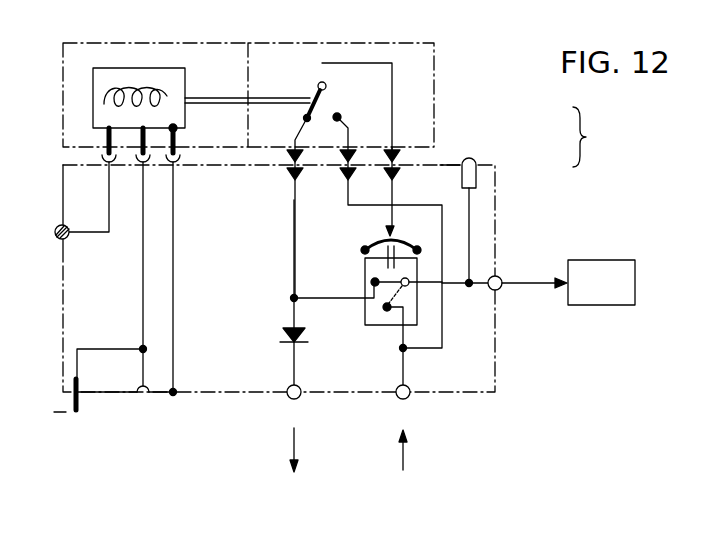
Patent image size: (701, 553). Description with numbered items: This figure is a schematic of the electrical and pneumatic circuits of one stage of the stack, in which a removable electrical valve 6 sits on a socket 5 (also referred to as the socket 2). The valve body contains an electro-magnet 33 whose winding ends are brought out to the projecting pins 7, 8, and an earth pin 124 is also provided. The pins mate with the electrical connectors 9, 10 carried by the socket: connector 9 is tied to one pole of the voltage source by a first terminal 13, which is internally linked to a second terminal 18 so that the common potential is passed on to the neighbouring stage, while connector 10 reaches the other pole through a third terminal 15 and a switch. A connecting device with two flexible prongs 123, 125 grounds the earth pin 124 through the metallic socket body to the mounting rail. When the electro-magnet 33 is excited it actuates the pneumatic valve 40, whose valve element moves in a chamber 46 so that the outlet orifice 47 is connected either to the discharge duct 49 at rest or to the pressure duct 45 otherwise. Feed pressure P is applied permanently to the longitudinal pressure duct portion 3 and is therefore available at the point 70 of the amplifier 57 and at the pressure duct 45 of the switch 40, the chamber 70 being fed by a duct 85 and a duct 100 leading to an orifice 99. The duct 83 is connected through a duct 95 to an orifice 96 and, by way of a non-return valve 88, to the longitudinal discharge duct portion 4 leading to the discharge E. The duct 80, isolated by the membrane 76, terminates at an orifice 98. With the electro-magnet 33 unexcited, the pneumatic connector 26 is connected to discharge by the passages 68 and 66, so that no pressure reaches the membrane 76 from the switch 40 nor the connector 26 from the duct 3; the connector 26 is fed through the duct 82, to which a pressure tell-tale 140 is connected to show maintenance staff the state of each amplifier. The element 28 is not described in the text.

The socket 2 is at (587, 148).
The longitudinal pressure duct portion 3 is at (403, 444).
The longitudinal discharge duct portion 4 is at (294, 444).
The socket 5 is at (497, 183).
The removable electrical valve 6 is at (434, 85).
The pin 7 is at (131, 140).
The pin 8 is at (92, 140).
The electrical connector 9 is at (138, 270).
The electrical connector 10 is at (92, 193).
The first terminal 13 is at (98, 391).
The third terminal 15 is at (55, 237).
The second terminal 18 is at (125, 402).
The pneumatic connector 26 is at (527, 297).
The load 28 is at (593, 294).
The electro-magnet 33 is at (135, 68).
The pneumatic valve 40 is at (344, 111).
The pressure duct 45 is at (355, 137).
The chamber 46 is at (310, 91).
The outlet orifice 47 is at (402, 143).
The discharge duct 49 is at (287, 140).
The amplifier 57 is at (388, 308).
The passage 66 is at (368, 289).
The passage 68 is at (415, 281).
The chamber 70 is at (408, 327).
The membrane 76 is at (372, 240).
The duct 80 is at (403, 241).
The duct 82 is at (457, 288).
The duct 83 is at (334, 289).
The duct 85 is at (420, 366).
The non-return valve 88 is at (282, 334).
The duct 95 is at (280, 251).
The orifice 96 is at (282, 230).
The orifice 98 is at (379, 255).
The orifice 99 is at (402, 195).
The duct 100 is at (440, 183).
The flexible prong 123 is at (188, 273).
The earth pin 124 is at (198, 140).
The flexible prong 125 is at (192, 379).
The pressure tell-tale 140 is at (467, 160).